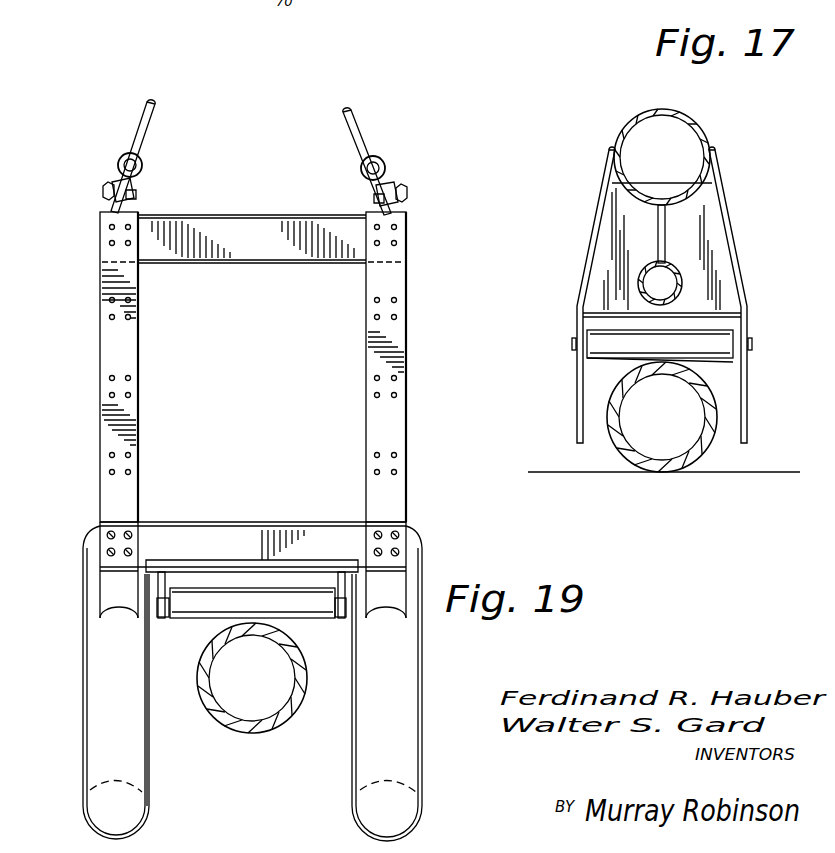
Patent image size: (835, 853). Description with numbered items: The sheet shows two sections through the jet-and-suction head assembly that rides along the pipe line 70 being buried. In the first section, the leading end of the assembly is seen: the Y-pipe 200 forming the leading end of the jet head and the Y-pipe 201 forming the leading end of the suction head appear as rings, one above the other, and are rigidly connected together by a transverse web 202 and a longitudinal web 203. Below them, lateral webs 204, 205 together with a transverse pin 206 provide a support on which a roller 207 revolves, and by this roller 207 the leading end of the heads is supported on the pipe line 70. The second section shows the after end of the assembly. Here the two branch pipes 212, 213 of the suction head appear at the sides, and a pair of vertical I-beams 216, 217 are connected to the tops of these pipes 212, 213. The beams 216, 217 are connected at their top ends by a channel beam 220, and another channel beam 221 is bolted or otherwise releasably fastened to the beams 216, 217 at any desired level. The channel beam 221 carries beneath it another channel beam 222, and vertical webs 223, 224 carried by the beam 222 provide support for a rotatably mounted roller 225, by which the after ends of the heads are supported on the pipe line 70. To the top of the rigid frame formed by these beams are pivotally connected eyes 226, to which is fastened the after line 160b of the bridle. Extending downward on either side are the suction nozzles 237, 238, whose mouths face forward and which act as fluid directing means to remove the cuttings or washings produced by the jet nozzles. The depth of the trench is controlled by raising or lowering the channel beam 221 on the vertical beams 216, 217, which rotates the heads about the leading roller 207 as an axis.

In FIG. 17, the pipe line 70 is at (714, 412).
In FIG. 19, the pipe line 70 is at (266, 732).
In FIG. 19, the after line of bridle 160b is at (152, 122).
In FIG. 17, the Y-pipe 200 is at (684, 281).
In FIG. 17, the Y-pipe 201 is at (698, 125).
In FIG. 17, the transverse web 202 is at (606, 216).
In FIG. 17, the longitudinal web 203 is at (668, 218).
In FIG. 17, the lateral web 204 is at (575, 285).
In FIG. 17, the lateral web 205 is at (748, 303).
In FIG. 17, the transverse pin 206 is at (570, 342).
In FIG. 17, the roller 207 is at (722, 358).
In FIG. 19, the branch pipe 212 is at (98, 525).
In FIG. 19, the branch pipe 213 is at (418, 548).
In FIG. 19, the vertical I-beam 216 is at (98, 424).
In FIG. 19, the vertical I-beam 217 is at (408, 340).
In FIG. 19, the channel beam 220 is at (230, 262).
In FIG. 19, the channel beam 221 is at (286, 523).
In FIG. 19, the channel beam 222 is at (154, 556).
In FIG. 19, the vertical web 223 is at (164, 618).
In FIG. 19, the vertical web 224 is at (340, 618).
In FIG. 19, the roller 225 is at (208, 585).
In FIG. 19, the eyes 226 is at (144, 168).
In FIG. 19, the suction nozzle 237 is at (150, 812).
In FIG. 19, the suction nozzle 238 is at (354, 822).